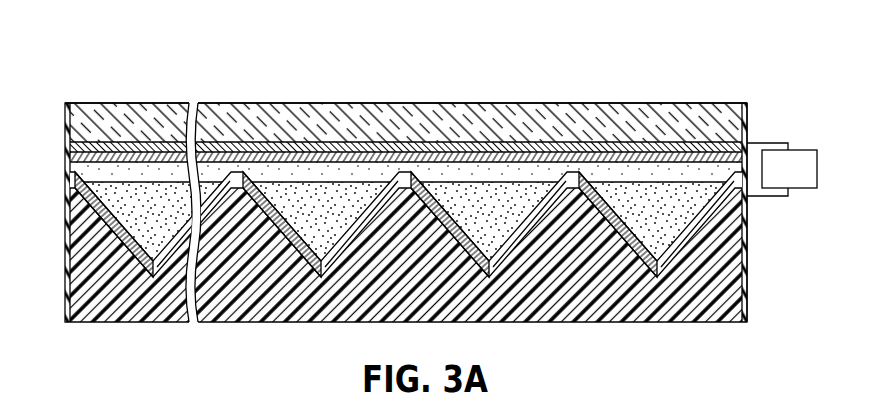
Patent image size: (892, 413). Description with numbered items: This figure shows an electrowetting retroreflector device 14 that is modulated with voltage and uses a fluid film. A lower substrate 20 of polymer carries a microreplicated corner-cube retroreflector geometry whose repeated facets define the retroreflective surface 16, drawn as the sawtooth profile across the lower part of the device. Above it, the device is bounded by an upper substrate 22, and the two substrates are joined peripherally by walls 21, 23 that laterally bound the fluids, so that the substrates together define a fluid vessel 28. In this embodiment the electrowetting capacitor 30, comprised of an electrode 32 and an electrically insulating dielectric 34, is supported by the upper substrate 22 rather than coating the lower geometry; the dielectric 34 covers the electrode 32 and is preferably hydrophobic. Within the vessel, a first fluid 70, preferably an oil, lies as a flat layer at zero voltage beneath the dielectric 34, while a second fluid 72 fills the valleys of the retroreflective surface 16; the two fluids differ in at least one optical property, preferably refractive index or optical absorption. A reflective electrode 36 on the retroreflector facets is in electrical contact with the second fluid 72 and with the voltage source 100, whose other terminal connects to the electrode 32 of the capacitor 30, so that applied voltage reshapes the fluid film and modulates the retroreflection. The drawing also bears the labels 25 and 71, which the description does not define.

The device 14 is at (229, 62).
The retroreflective surface 16 is at (533, 228).
The lower substrate 20 is at (76, 290).
The wall 21 is at (66, 245).
The upper substrate 22 is at (67, 114).
The wall 23 is at (742, 233).
The top surface 25 is at (523, 103).
The fluid vessel 28 is at (748, 293).
The electrowetting capacitor 30 is at (314, 141).
The electrode 32 is at (66, 146).
The dielectric 34 is at (66, 157).
The reflective electrode 36 is at (90, 205).
The first fluid 70 is at (97, 170).
The fill boundary 71 is at (133, 182).
The second fluid 72 is at (165, 203).
The voltage source 100 is at (782, 169).